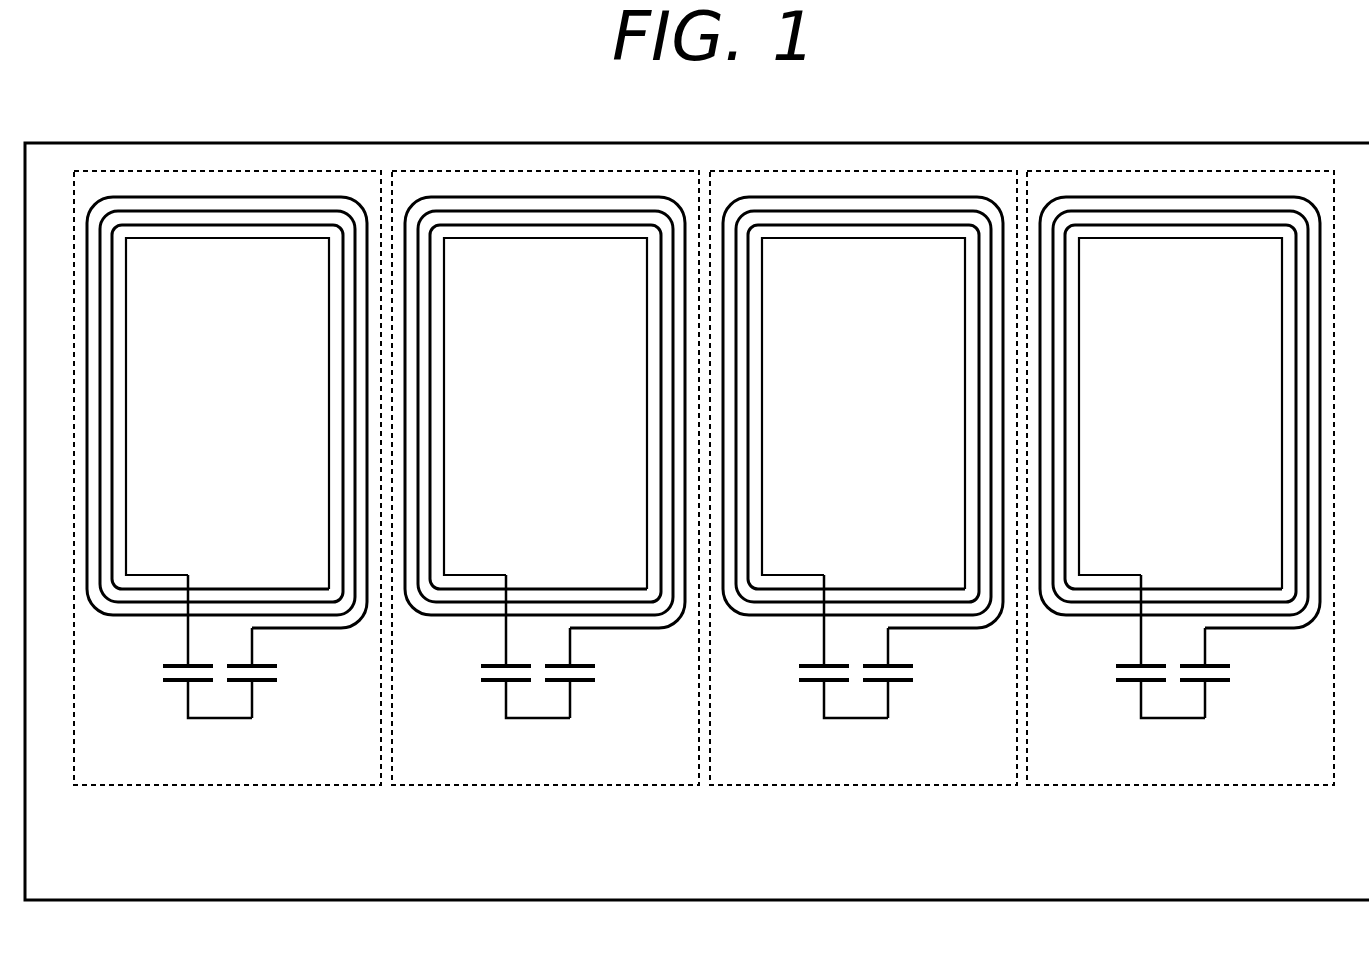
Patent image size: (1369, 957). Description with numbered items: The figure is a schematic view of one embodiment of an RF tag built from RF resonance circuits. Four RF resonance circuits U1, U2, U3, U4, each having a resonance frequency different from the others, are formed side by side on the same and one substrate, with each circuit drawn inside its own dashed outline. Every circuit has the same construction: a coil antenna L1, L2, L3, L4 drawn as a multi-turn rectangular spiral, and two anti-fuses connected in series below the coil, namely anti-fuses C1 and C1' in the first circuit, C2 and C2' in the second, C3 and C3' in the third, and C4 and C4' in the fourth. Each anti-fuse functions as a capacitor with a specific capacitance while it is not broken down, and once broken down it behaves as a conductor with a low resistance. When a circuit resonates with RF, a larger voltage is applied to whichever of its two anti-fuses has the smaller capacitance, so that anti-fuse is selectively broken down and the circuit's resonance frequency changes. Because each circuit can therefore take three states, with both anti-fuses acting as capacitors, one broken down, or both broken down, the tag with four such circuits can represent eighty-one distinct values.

The RF resonance circuit U1 is at (227, 504).
The RF resonance circuit U2 is at (545, 504).
The RF resonance circuit U3 is at (863, 504).
The RF resonance circuit U4 is at (1180, 504).
The coil antenna L1 is at (227, 412).
The coil antenna L2 is at (545, 412).
The coil antenna L3 is at (863, 412).
The coil antenna L4 is at (1180, 412).
The anti-fuse C1 is at (186, 646).
The anti-fuse C2 is at (504, 646).
The anti-fuse C3 is at (822, 646).
The anti-fuse C4 is at (1139, 646).
The anti-fuse C1' is at (283, 673).
The anti-fuse C2' is at (601, 673).
The anti-fuse C3' is at (919, 673).
The anti-fuse C4' is at (1236, 673).